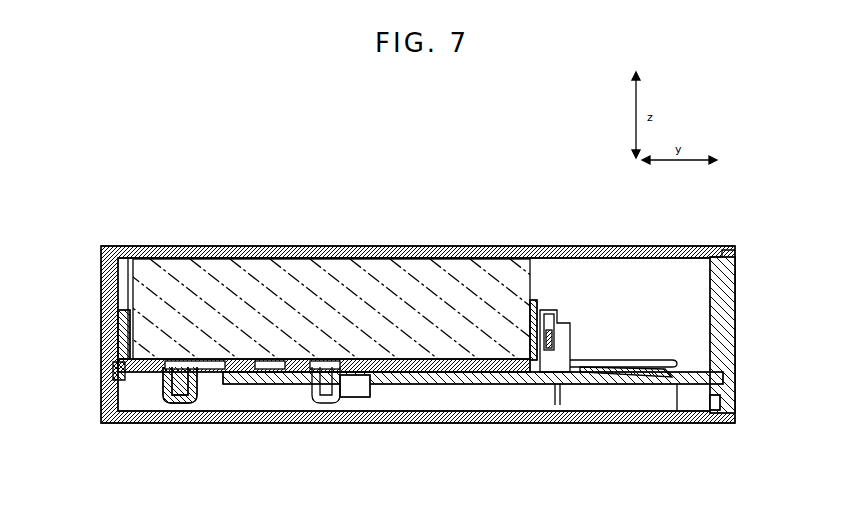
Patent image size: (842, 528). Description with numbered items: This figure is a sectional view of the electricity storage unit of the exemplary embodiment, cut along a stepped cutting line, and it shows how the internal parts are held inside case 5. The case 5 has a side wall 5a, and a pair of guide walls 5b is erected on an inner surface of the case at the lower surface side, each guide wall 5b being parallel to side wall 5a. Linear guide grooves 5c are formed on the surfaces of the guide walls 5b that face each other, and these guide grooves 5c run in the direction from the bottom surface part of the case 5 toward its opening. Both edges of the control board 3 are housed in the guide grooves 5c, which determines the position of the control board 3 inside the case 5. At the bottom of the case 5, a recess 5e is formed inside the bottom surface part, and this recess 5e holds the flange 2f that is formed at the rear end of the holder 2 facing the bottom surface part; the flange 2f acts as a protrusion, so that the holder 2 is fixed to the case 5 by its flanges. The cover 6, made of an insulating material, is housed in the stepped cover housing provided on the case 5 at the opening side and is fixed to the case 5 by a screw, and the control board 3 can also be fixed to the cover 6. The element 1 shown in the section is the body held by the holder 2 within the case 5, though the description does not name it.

The electronic component 1 is at (373, 285).
The holder 2 is at (425, 374).
The flange 2f is at (116, 358).
The control board 3 is at (492, 373).
The case 5 is at (289, 252).
The side wall 5a is at (613, 360).
The guide wall 5b is at (660, 370).
The guide groove 5c is at (737, 410).
The recess 5e is at (116, 335).
The cover 6 is at (719, 327).